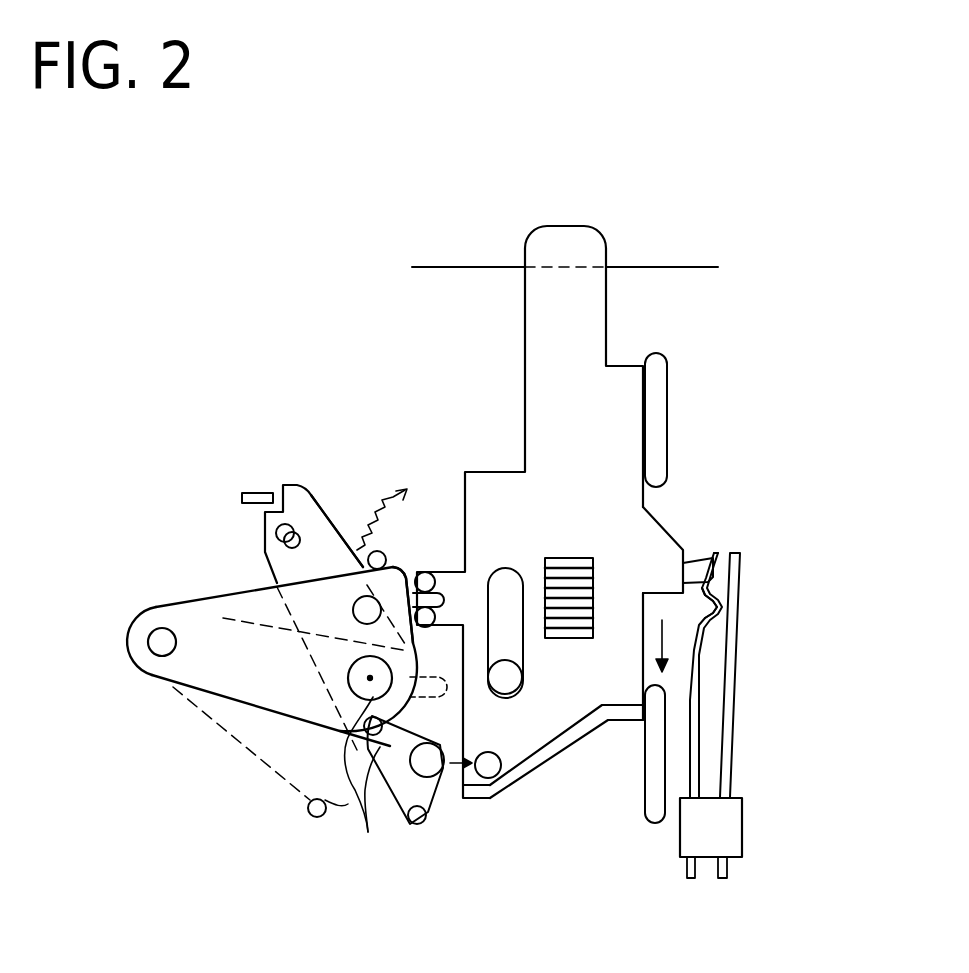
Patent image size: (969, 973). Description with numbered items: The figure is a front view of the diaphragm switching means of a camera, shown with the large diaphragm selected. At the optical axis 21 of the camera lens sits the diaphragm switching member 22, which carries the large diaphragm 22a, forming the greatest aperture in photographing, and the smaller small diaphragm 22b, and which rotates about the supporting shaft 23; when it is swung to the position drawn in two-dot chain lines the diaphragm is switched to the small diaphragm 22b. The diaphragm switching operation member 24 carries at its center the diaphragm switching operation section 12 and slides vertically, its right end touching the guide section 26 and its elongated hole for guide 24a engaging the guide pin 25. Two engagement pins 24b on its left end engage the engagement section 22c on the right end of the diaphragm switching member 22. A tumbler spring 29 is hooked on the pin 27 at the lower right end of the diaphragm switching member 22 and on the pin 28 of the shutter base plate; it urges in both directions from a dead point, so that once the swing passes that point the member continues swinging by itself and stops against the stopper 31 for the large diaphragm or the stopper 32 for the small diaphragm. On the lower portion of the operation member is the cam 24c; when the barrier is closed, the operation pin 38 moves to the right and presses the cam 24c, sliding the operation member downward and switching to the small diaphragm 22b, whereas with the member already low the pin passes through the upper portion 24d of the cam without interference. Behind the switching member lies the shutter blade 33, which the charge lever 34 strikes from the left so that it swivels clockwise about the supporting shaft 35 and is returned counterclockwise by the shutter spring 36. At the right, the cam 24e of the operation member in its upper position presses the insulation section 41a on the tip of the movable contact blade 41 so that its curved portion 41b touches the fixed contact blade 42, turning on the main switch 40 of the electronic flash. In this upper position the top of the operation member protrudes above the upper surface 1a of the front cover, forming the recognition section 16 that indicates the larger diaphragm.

The upper surface 1a is at (462, 267).
The recognition section 16 is at (565, 243).
The diaphragm switching operation member 24 is at (525, 308).
The elongated hole for guide 24a is at (505, 575).
The engagement pins 24b is at (425, 572).
The cam 24c is at (543, 747).
The upper portion of the cam 24d is at (603, 703).
The cam 24e is at (658, 552).
The guide pin 25 is at (502, 677).
The guide section 26 is at (668, 422).
The diaphragm switching operation section 12 is at (567, 558).
The optical axis 21 is at (370, 677).
The diaphragm switching member 22 is at (213, 597).
The large diaphragm 22a is at (368, 832).
The small diaphragm 22b is at (265, 583).
The engagement section 22c is at (408, 578).
The supporting shaft 23 is at (163, 657).
The pin 27 is at (405, 824).
The pin 28 is at (430, 830).
The tumbler spring 29 is at (438, 773).
The stopper 31 is at (366, 552).
The stopper 32 is at (317, 818).
The shutter blade 33 is at (327, 517).
The charge lever 34 is at (252, 493).
The supporting shaft 35 is at (287, 524).
The shutter spring 36 is at (372, 530).
The operation pin 38 is at (488, 778).
The main switch 40 is at (708, 895).
The movable contact blade 41 is at (700, 715).
The insulation section 41a is at (700, 560).
The curved portion 41b is at (727, 612).
The fixed contact blade 42 is at (737, 748).